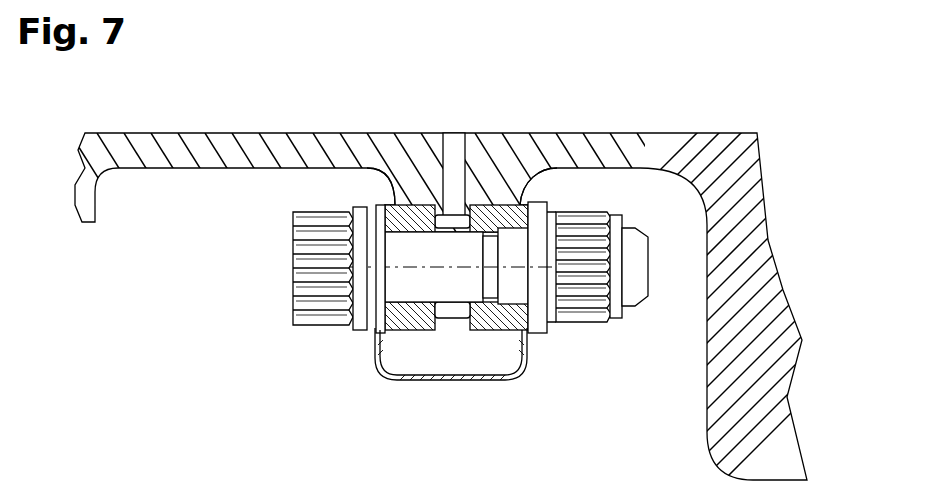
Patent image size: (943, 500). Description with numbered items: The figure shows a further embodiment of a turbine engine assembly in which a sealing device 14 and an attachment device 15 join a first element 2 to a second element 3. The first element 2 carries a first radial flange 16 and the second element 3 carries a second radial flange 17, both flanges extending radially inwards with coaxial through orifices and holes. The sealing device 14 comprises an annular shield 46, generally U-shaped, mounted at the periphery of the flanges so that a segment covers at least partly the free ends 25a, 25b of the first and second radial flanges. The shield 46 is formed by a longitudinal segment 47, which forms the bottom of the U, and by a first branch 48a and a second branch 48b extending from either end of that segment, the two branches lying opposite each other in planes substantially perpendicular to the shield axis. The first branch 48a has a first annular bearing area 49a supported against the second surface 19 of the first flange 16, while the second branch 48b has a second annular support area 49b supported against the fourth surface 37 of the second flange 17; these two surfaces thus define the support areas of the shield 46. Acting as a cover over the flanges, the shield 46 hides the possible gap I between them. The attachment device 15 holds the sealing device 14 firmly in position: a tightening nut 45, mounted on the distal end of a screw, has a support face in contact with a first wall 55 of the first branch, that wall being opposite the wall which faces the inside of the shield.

The first element 2 is at (190, 152).
The second element 3 is at (708, 187).
The gap I is at (457, 170).
The first radial flange 16 is at (432, 177).
The second radial flange 17 is at (497, 170).
The second surface 19 is at (377, 188).
The fourth surface 37 is at (523, 197).
The first annular bearing area 49a is at (398, 209).
The second annular support area 49b is at (497, 220).
The attachment device 15 is at (291, 322).
The sealing device 14 is at (366, 376).
The first branch 48a is at (375, 342).
The second branch 48b is at (522, 340).
The annular shield 46 is at (393, 337).
The longitudinal segment 47 is at (474, 322).
The free end of the first flange 25a is at (435, 320).
The free end of the second flange 25b is at (498, 322).
The first wall 55 is at (500, 337).
The nut 45 is at (597, 335).